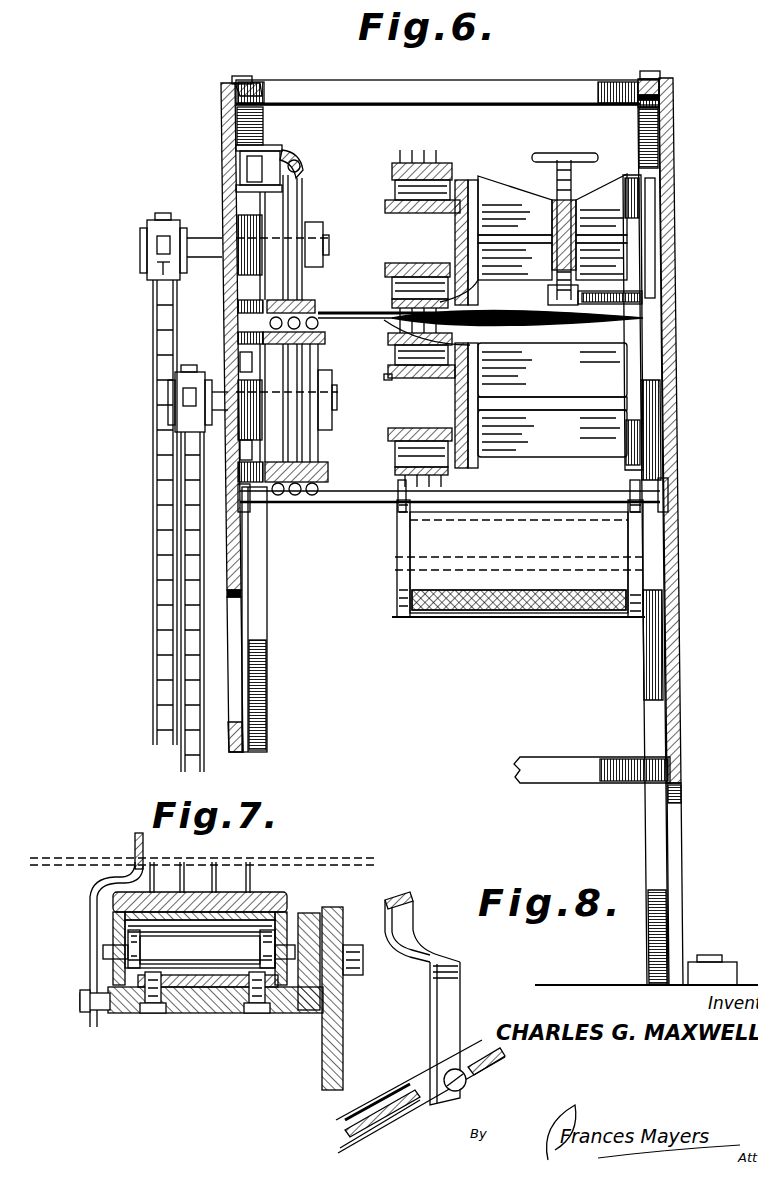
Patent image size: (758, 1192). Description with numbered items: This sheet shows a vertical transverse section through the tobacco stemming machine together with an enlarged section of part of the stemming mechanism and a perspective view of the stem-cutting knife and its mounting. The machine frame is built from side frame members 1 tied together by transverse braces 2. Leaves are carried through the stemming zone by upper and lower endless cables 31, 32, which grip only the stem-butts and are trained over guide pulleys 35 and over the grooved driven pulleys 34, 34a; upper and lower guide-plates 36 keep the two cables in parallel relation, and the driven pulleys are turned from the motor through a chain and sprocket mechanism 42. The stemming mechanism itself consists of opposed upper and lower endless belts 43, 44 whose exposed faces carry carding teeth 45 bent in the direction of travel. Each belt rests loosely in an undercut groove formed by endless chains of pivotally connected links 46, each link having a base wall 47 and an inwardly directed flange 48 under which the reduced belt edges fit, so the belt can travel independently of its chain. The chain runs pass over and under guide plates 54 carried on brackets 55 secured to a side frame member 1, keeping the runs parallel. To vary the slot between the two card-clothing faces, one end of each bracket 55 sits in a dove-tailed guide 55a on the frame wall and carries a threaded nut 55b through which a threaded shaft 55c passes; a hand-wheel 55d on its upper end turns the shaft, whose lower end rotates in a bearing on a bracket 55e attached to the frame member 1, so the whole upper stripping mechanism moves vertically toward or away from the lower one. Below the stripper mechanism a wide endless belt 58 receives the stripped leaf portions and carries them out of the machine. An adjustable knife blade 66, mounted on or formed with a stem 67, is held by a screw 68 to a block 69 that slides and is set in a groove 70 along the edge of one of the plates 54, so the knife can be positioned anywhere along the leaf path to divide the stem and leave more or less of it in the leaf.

In FIG. 6, the side frame member 1 is at (222, 152).
In FIG. 6, the transverse brace 2 is at (522, 92).
In FIG. 6, the upper endless cable 31 is at (305, 175).
In FIG. 6, the lower endless cable 32 is at (340, 305).
In FIG. 6, the grooved driven pulley 34 is at (296, 212).
In FIG. 6, the driven pulley 34a is at (322, 455).
In FIG. 6, the guide pulley 35 is at (265, 176).
In FIG. 6, the guide-plate 36 is at (322, 350).
In FIG. 6, the chain and sprocket mechanism 42 is at (165, 492).
In FIG. 6, the upper endless belt 43 is at (394, 166).
In FIG. 7, the upper endless belt 43 is at (222, 900).
In FIG. 6, the lower endless belt 44 is at (470, 340).
In FIG. 6, the carding teeth 45 is at (412, 163).
In FIG. 7, the carding teeth 45 is at (249, 867).
In FIG. 6, the chain link 46 is at (450, 178).
In FIG. 7, the chain link 46 is at (295, 918).
In FIG. 7, the base wall 47 is at (185, 930).
In FIG. 7, the inwardly directed flange 48 is at (110, 888).
In FIG. 6, the guide plate 54 is at (414, 262).
In FIG. 7, the guide plate 54 is at (228, 1008).
In FIG. 8, the guide plate 54 is at (410, 1088).
In FIG. 6, the bracket 55 is at (502, 176).
In FIG. 7, the bracket 55 is at (330, 1037).
In FIG. 6, the dove-tailed guide 55a is at (657, 212).
In FIG. 6, the threaded nut 55b is at (598, 181).
In FIG. 6, the threaded shaft 55c is at (543, 189).
In FIG. 6, the hand-wheel 55d is at (587, 142).
In FIG. 6, the bracket 55e is at (578, 298).
In FIG. 6, the endless belt 58 is at (528, 614).
In FIG. 6, the knife blade 66 is at (396, 315).
In FIG. 7, the knife blade 66 is at (134, 846).
In FIG. 8, the knife blade 66 is at (407, 897).
In FIG. 7, the stem 67 is at (92, 920).
In FIG. 8, the stem 67 is at (443, 990).
In FIG. 6, the screw 68 is at (384, 380).
In FIG. 7, the screw 68 is at (88, 1006).
In FIG. 8, the screw 68 is at (466, 1088).
In FIG. 8, the block 69 is at (427, 1104).
In FIG. 7, the groove 70 is at (102, 1015).
In FIG. 8, the groove 70 is at (345, 1133).